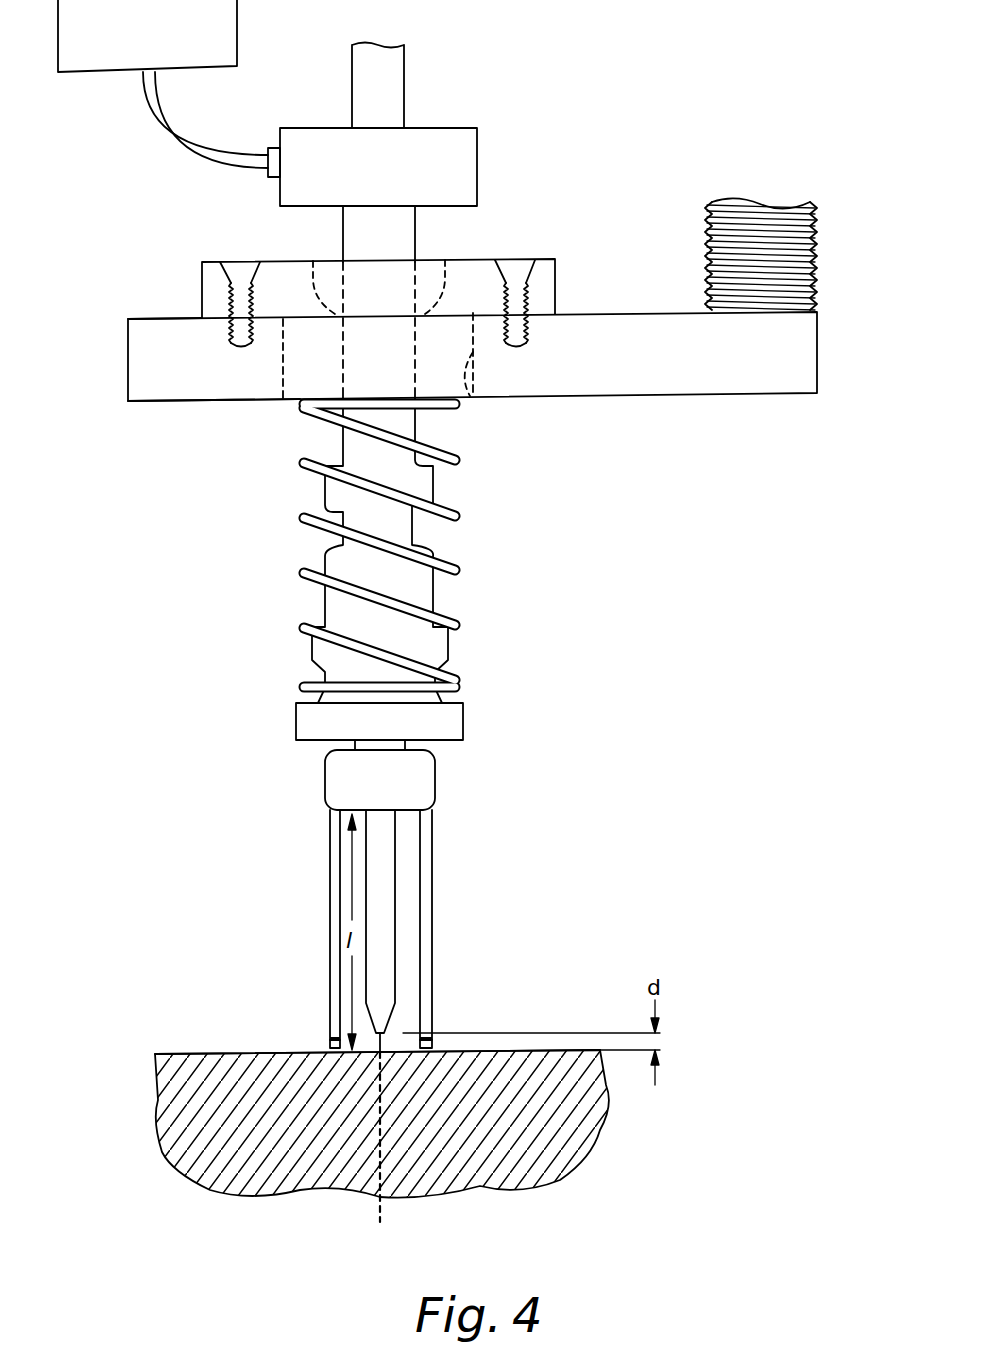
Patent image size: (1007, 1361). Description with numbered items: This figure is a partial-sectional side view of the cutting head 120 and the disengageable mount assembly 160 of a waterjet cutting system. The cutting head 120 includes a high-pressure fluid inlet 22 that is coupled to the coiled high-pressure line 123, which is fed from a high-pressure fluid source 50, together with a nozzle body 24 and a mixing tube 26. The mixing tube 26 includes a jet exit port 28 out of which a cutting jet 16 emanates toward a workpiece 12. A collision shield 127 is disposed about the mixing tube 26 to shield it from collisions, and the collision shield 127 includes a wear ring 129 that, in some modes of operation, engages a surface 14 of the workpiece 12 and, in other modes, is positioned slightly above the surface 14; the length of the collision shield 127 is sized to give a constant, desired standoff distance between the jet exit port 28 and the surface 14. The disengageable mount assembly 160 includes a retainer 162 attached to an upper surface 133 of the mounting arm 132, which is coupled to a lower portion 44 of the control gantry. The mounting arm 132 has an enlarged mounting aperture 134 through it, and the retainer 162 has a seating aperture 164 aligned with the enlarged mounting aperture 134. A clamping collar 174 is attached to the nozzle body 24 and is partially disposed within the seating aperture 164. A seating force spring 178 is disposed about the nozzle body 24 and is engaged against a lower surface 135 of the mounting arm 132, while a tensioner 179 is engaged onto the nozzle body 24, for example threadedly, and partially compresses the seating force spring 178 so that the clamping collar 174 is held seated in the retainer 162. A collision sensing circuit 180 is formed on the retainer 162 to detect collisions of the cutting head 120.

The high-pressure fluid source 50 is at (238, 22).
The cutting head 120 is at (505, 94).
The coiled high-pressure line 123 is at (166, 142).
The high-pressure fluid inlet 22 is at (268, 172).
The collision sensing circuit 180 is at (207, 233).
The disengageable mount assembly 160 is at (594, 231).
The lower portion of the control gantry 44 is at (820, 240).
The seating aperture 164 is at (318, 262).
The clamping collar 174 is at (430, 258).
The retainer 162 is at (202, 275).
The upper surface of the mounting arm 133 is at (148, 318).
The mounting arm 132 is at (128, 360).
The lower surface of the mounting arm 135 is at (148, 402).
The enlarged mounting aperture 134 is at (470, 402).
The nozzle body 24 is at (340, 450).
The seating force spring 178 is at (318, 625).
The tensioner 179 is at (465, 718).
The collision shield 127 is at (330, 875).
The wear ring 129 is at (330, 1045).
The mixing tube 26 is at (395, 905).
The jet exit port 28 is at (400, 1033).
The workpiece 12 is at (130, 1066).
The surface of the workpiece 14 is at (207, 1052).
The cutting jet 16 is at (380, 1216).